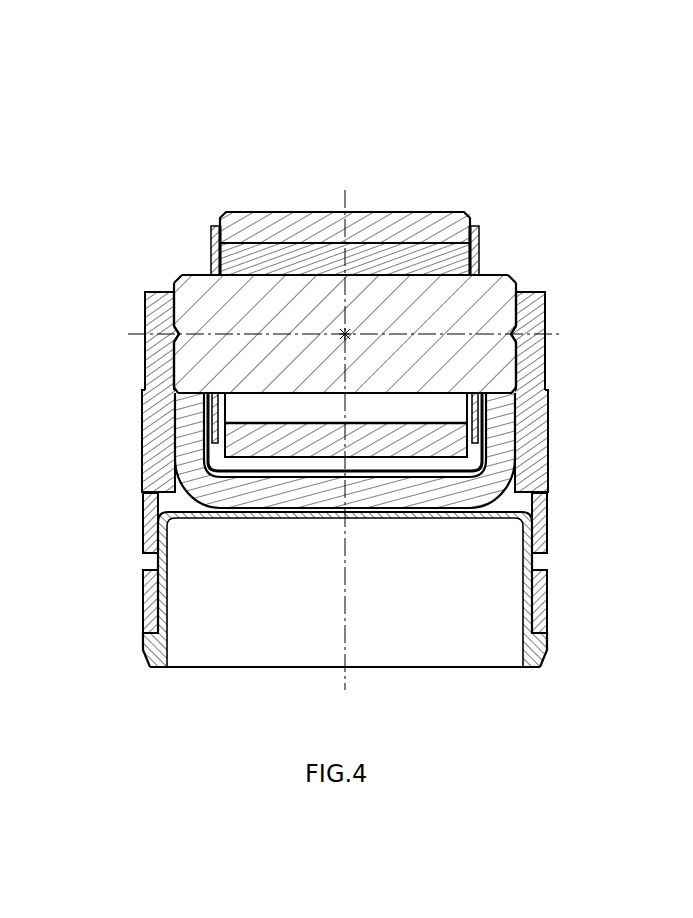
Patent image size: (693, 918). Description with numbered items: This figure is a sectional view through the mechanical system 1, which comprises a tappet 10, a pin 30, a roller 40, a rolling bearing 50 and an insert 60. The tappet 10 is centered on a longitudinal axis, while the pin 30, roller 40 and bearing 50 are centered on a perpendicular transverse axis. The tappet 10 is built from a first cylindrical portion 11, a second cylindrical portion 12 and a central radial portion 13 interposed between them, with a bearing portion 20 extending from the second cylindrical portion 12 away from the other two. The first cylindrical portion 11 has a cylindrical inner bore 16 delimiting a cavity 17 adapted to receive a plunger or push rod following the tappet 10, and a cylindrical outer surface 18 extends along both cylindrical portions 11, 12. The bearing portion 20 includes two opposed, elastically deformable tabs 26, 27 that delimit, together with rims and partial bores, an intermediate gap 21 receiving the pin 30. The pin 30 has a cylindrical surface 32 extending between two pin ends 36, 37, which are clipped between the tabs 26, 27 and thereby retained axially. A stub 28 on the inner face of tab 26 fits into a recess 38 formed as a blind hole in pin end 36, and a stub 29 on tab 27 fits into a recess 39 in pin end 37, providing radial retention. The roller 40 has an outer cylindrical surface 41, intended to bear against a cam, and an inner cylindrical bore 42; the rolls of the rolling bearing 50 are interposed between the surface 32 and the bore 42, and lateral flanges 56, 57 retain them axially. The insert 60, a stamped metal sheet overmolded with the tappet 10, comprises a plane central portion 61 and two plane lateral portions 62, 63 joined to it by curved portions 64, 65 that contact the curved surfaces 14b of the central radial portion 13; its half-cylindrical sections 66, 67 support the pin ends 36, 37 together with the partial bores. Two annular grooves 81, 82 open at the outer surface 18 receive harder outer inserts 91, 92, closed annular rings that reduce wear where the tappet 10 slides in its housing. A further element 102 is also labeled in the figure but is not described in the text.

The system 1 is at (148, 220).
The tappet 10 is at (165, 672).
The first cylindrical portion 11 is at (535, 655).
The second cylindrical portion 12 is at (535, 382).
The central radial portion 13 is at (493, 452).
The curved surfaces 14b is at (485, 487).
The cylindrical inner bore 16 is at (520, 640).
The cavity 17 is at (407, 640).
The cylindrical outer surface 18 is at (548, 442).
The bearing portion 20 is at (545, 255).
The intermediate gap 21 is at (437, 160).
The tab 26 is at (145, 320).
The tab 27 is at (540, 300).
The stub 28 is at (177, 332).
The stub 29 is at (512, 330).
The pin 30 is at (263, 290).
The cylindrical surface 32 is at (297, 263).
The pin end 36 is at (180, 290).
The pin end 37 is at (507, 285).
The recess 38 is at (172, 337).
The recess 39 is at (520, 337).
The roller 40 is at (368, 230).
The outer cylindrical surface 41 is at (395, 210).
The inner cylindrical bore 42 is at (410, 247).
The rolling bearing 50 is at (380, 412).
The lateral flange 56 is at (211, 242).
The lateral flange 57 is at (479, 240).
The insert 60 is at (238, 530).
The plane central portion 61 is at (305, 500).
The plane lateral portion 62 is at (195, 435).
The plane lateral portion 63 is at (500, 458).
The curved portion 64 is at (183, 494).
The curved portion 65 is at (523, 490).
The half-cylindrical section 66 is at (195, 391).
The half-cylindrical section 67 is at (497, 391).
The annular groove 81 is at (540, 580).
The annular groove 82 is at (540, 538).
The outer insert 91 is at (150, 600).
The outer insert 92 is at (150, 522).
The ring lower left portion 102 is at (160, 430).